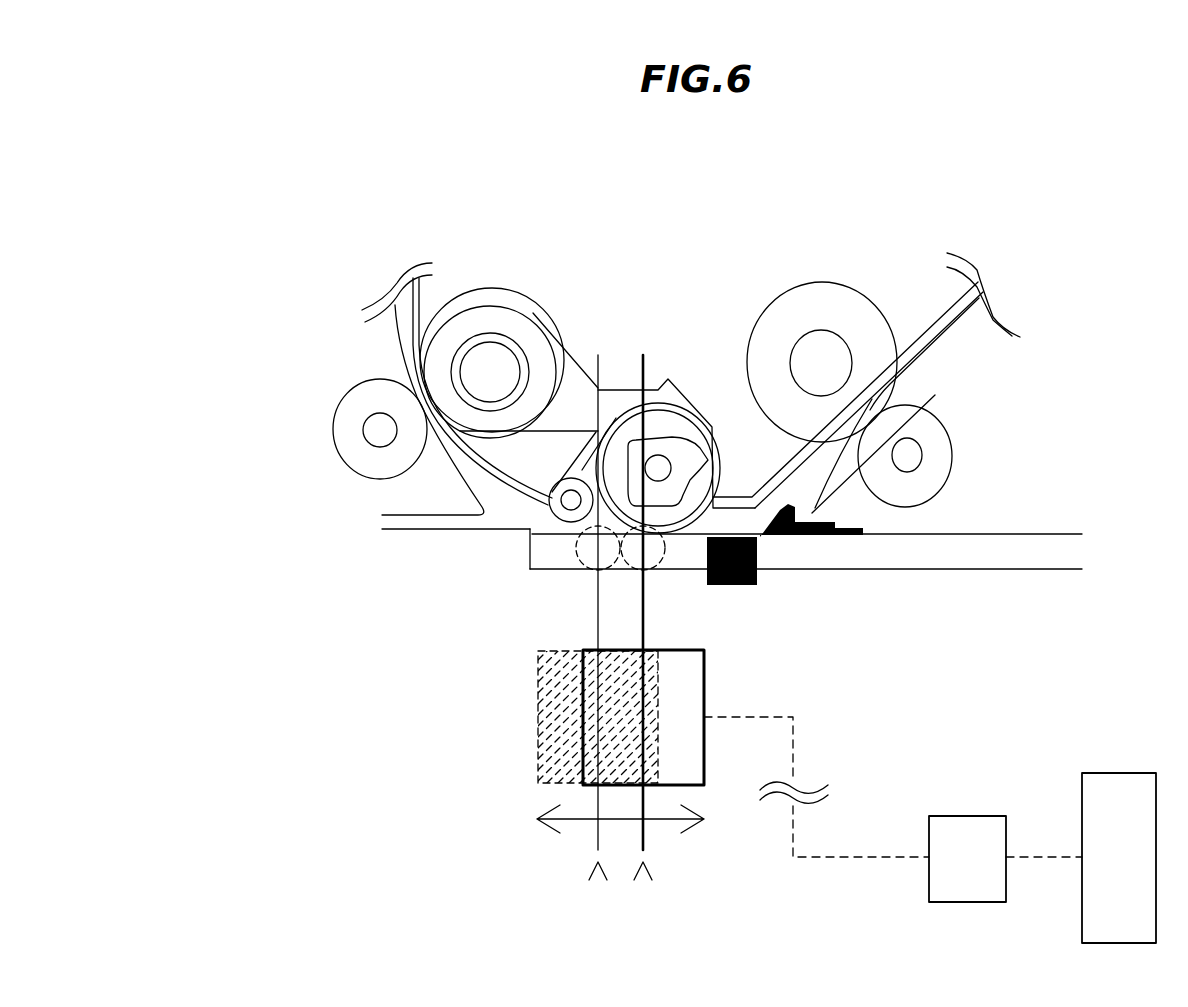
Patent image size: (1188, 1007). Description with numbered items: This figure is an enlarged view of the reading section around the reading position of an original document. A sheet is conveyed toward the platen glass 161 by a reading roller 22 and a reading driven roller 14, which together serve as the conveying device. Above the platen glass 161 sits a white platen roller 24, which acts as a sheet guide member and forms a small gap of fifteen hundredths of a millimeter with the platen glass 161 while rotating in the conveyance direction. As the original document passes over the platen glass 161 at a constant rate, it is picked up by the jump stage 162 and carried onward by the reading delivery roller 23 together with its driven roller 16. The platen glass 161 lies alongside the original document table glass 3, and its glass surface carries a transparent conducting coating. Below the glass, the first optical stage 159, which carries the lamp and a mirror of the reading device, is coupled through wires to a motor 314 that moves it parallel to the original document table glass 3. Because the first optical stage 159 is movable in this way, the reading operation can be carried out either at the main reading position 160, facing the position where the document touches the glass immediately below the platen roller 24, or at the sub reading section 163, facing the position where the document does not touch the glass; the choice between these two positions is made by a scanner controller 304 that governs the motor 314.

The original document table glass 3 is at (915, 556).
The reading driven roller 14 is at (360, 447).
The roller 16 is at (933, 478).
The reading roller 22 is at (530, 338).
The reading delivery roller 23 is at (830, 298).
The platen roller 24 is at (698, 450).
The first optical stage 159 is at (687, 692).
The main reading position 160 is at (643, 864).
The platen glass 161 is at (556, 557).
The jump stage 162 is at (753, 582).
The sub reading section 163 is at (598, 864).
The scanner controller 304 is at (1115, 785).
The motor 314 is at (967, 830).